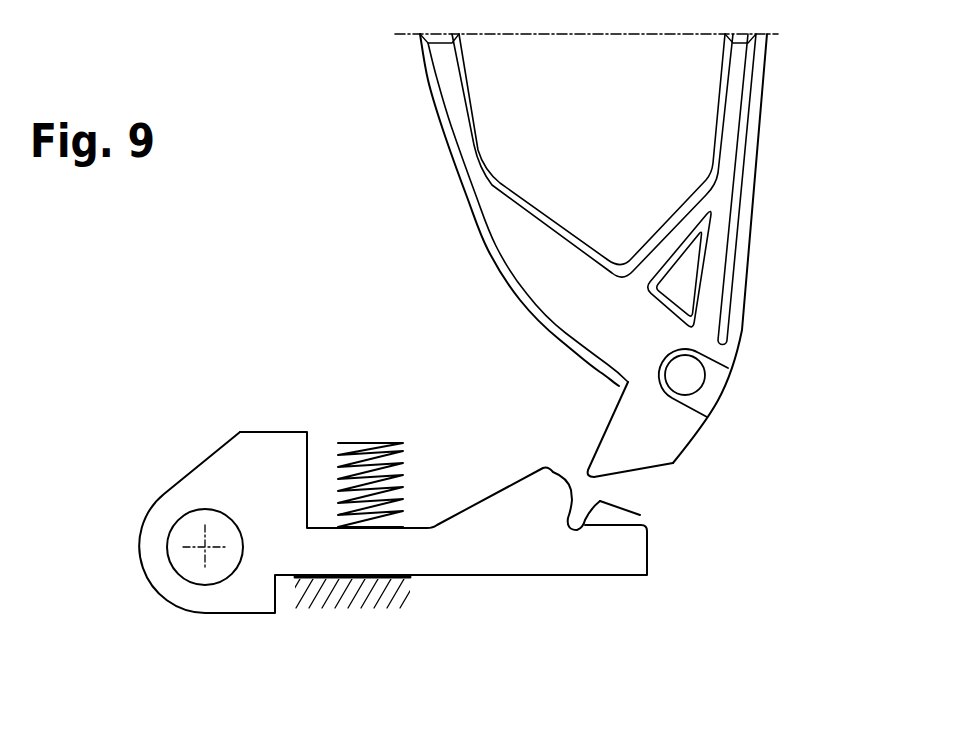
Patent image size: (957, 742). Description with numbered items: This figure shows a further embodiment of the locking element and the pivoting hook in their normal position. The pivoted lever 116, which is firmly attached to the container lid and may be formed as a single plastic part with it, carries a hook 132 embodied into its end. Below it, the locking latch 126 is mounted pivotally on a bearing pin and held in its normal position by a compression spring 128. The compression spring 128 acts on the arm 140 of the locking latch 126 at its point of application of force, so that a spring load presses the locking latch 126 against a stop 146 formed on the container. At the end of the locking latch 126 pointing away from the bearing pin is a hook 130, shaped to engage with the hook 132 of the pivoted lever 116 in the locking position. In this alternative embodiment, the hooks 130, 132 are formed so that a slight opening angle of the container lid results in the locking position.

The pivoted lever 116 is at (480, 204).
The locking latch 126 is at (637, 557).
The compression spring 128 is at (362, 455).
The hook 130 is at (640, 515).
The hook 132 is at (583, 470).
The arm 140 is at (505, 563).
The stop 146 is at (357, 580).